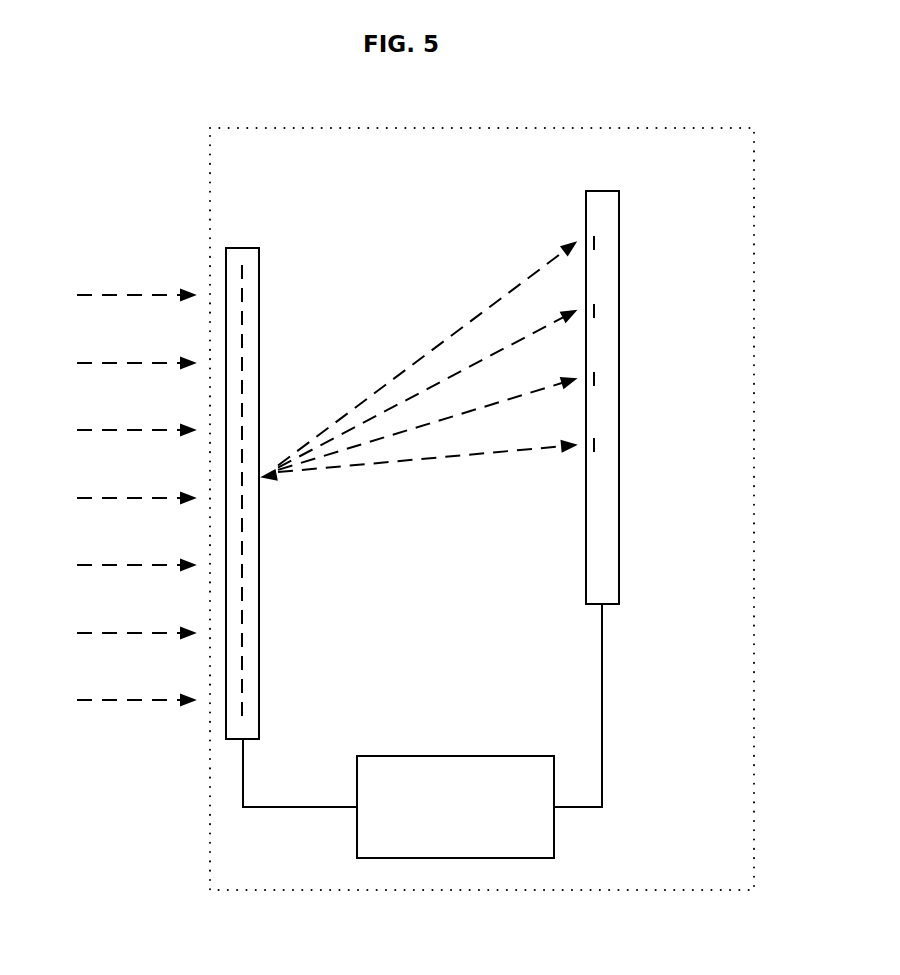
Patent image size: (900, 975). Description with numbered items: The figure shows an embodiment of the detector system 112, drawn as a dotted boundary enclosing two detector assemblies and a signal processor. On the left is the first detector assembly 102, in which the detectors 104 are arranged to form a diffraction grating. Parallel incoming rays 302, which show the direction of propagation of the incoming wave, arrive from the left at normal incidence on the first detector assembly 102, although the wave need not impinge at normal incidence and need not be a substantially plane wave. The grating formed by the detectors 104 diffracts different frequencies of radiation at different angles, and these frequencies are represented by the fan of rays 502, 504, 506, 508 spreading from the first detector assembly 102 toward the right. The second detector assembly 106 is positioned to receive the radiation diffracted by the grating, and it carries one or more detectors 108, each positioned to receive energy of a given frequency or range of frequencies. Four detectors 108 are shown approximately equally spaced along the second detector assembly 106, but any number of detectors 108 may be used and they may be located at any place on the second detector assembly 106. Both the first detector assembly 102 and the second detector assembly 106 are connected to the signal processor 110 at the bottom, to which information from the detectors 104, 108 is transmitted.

The first detector assembly 102 is at (242, 248).
The detectors 104 is at (242, 270).
The second detector assembly 106 is at (602, 191).
The detectors 108 is at (594, 243).
The signal processor 110 is at (467, 858).
The detector system 112 is at (754, 409).
The parallel incoming rays 302 is at (118, 702).
The ray 502 is at (455, 457).
The ray 504 is at (540, 390).
The ray 506 is at (400, 402).
The ray 508 is at (466, 324).